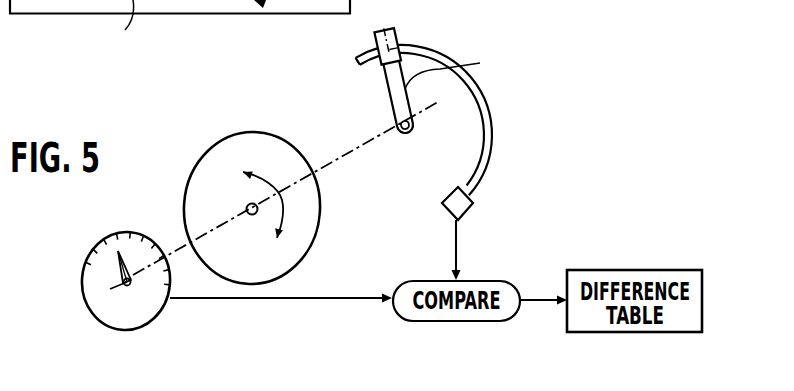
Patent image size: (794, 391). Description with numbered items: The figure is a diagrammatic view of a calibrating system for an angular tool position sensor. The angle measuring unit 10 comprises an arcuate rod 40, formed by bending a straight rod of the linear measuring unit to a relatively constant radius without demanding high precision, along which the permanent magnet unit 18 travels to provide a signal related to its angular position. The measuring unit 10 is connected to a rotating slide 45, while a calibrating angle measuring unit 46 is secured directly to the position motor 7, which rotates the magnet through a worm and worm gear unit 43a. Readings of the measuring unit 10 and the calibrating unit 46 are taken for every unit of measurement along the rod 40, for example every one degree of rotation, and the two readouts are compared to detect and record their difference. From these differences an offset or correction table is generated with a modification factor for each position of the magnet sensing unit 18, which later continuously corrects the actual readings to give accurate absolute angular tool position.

The position motor 7 is at (211, 148).
The angle measuring unit 10 is at (448, 97).
The permanent magnet unit 18 is at (383, 28).
The arcuate rod 40 is at (482, 157).
The rotating slide 45 is at (456, 68).
The calibrating angle measuring unit 46 is at (83, 265).
The worm and worm gear unit 43a is at (113, 25).